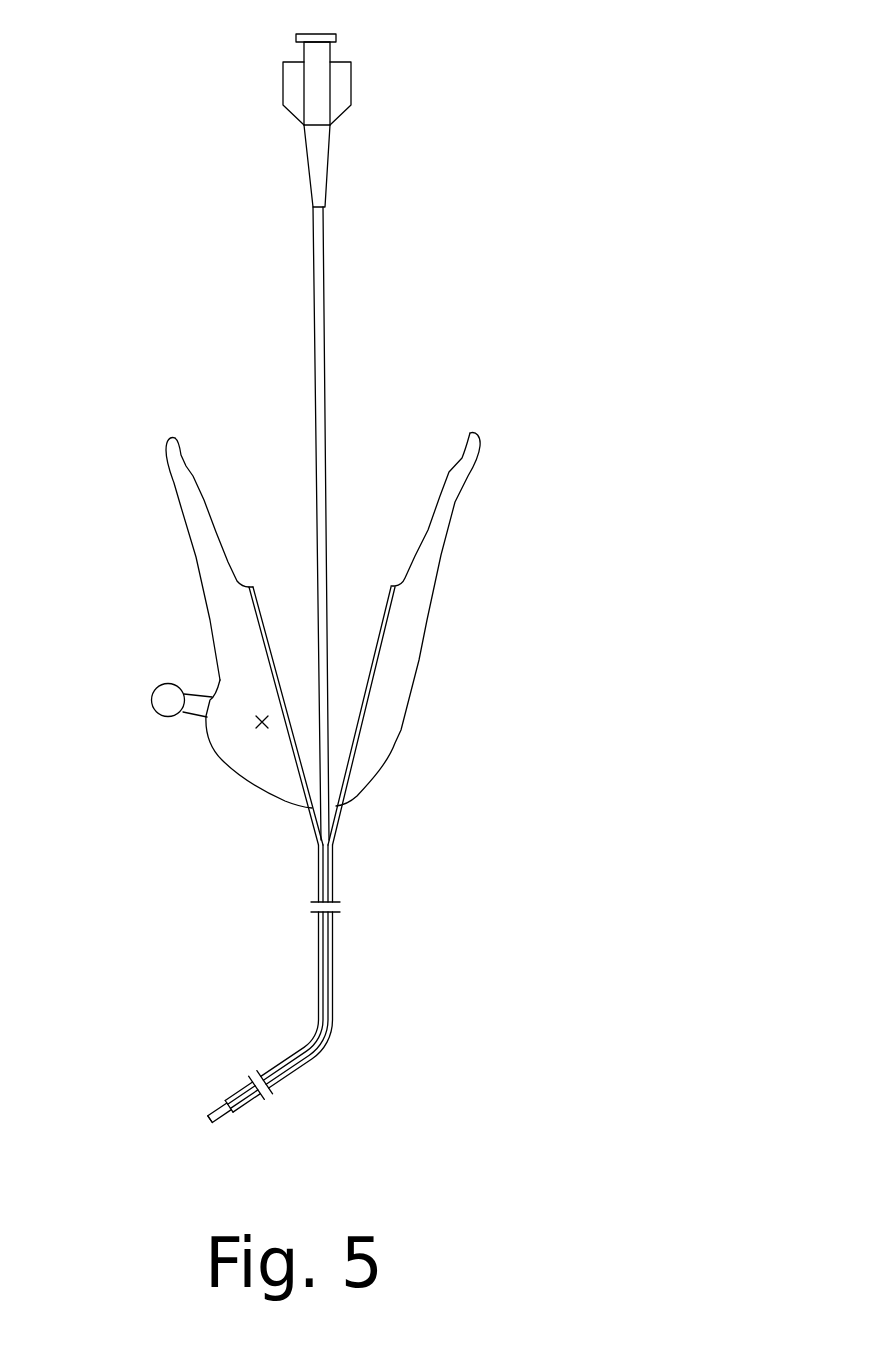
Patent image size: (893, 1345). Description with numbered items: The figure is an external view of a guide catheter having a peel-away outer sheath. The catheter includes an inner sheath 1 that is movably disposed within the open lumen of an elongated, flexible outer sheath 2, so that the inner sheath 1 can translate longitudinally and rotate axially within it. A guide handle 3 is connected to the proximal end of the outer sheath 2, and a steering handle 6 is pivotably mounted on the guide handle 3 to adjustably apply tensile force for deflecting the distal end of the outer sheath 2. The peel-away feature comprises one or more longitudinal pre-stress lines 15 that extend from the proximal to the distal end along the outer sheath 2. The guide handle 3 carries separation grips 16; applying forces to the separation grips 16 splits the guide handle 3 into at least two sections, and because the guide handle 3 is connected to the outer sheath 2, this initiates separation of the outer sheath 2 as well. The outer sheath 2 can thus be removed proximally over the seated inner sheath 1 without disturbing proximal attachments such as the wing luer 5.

The inner sheath 1 is at (230, 1141).
The outer sheath 2 is at (317, 978).
The guide handle 3 is at (215, 690).
The wing luer 5 is at (372, 88).
The steering handle 6 is at (152, 712).
The longitudinal pre-stress lines 15 is at (333, 843).
The separation grips 16 is at (193, 472).